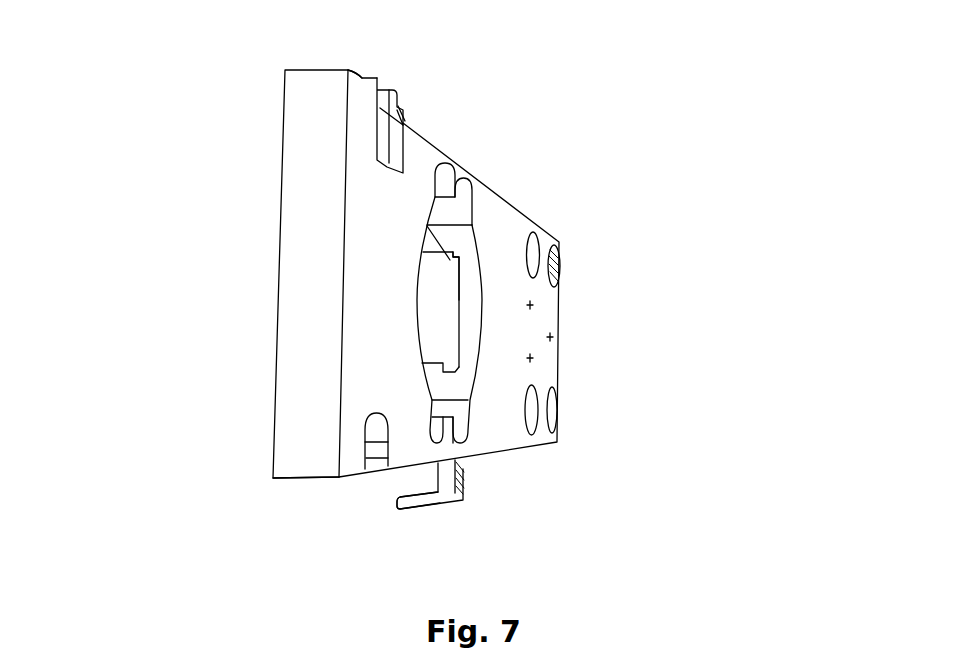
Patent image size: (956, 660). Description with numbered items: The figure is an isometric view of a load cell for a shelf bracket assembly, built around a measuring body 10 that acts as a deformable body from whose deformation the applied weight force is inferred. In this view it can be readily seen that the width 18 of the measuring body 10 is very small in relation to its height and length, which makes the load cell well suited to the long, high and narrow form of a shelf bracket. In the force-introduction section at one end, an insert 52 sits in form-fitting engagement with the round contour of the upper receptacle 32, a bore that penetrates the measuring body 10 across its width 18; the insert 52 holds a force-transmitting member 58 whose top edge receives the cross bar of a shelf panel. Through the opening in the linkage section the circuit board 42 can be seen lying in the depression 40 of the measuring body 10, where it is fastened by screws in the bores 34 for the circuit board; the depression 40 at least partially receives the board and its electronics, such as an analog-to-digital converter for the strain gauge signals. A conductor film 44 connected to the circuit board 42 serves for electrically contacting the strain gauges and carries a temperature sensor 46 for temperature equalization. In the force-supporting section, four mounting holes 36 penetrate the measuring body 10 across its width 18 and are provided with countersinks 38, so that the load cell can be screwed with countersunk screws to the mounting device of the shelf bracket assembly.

The measuring body 10 is at (502, 193).
The width 18 is at (337, 535).
The receptacle 32 is at (353, 64).
The bores for attachment of a circuit board 34 is at (531, 305).
The mounting holes 36 is at (600, 310).
The countersinks 38 is at (535, 240).
The depression 40 is at (463, 263).
The circuit board 42 is at (443, 315).
The conductor film 44 is at (449, 515).
The temperature sensor 46 is at (408, 503).
The insert 52 is at (432, 111).
The force-transmitting member 58 is at (397, 133).